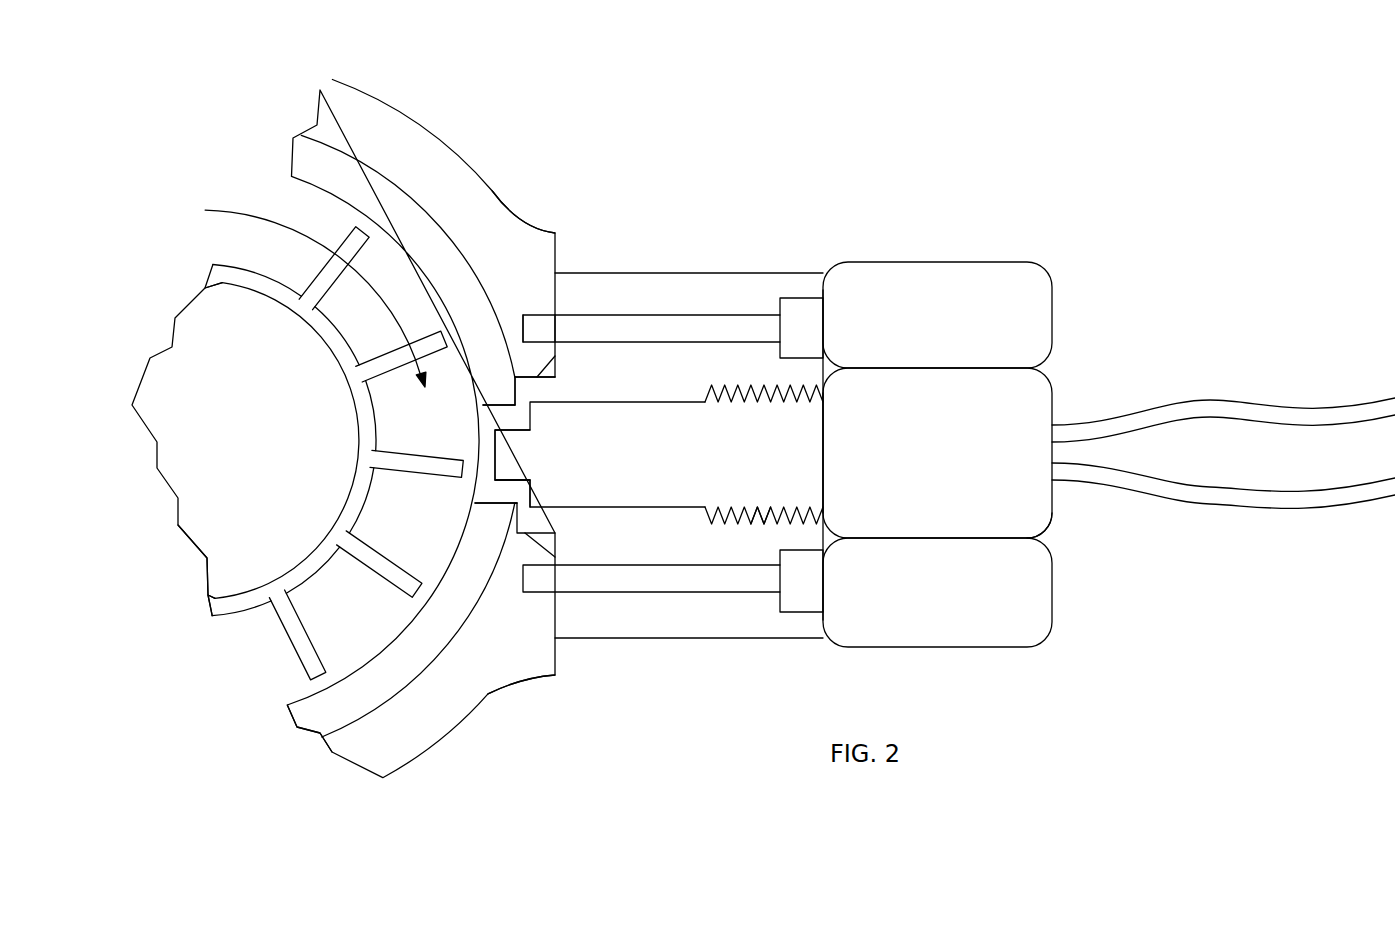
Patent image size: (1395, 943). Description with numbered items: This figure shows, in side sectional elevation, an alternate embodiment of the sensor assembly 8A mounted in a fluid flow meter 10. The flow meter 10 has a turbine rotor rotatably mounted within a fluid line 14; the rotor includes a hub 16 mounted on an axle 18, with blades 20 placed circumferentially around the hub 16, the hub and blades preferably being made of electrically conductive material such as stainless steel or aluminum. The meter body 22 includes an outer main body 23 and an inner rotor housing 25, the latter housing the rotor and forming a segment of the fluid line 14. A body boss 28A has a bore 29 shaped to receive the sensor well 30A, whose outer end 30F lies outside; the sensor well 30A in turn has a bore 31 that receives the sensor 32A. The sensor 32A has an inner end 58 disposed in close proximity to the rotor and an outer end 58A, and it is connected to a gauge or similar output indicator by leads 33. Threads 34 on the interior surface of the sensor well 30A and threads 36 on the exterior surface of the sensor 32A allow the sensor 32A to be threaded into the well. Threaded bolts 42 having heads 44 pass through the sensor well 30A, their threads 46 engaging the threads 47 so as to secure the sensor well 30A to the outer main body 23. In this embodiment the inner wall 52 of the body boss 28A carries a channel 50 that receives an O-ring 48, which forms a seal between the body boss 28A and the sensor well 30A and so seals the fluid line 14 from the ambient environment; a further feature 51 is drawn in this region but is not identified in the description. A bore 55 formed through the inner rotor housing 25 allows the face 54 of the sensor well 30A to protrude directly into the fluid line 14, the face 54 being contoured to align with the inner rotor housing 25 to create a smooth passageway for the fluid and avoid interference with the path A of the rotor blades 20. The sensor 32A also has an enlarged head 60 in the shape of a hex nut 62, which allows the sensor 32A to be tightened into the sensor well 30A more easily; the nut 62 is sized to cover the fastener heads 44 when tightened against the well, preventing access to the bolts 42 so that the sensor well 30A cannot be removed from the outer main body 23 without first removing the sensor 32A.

The fluid flow meter 10 is at (432, 66).
The fluid line 14 is at (262, 649).
The hub 16 is at (207, 568).
The axle 18 is at (205, 438).
The blades 20 is at (305, 612).
The body 22 is at (416, 141).
The outer main body 23 is at (490, 193).
The inner rotor housing 25 is at (300, 718).
The body boss 28A is at (542, 670).
The bore 29 is at (495, 500).
The sensor well 30A is at (668, 623).
The outer end 30F is at (828, 262).
The bore 31 is at (680, 399).
The sensor 32A is at (600, 445).
The leads 33 is at (1268, 403).
The threads 34 is at (752, 520).
The threads 36 is at (758, 522).
The threaded bolts 42 is at (700, 315).
The heads 44 is at (813, 325).
The threads 46 is at (550, 323).
The threads 47 is at (537, 338).
The O-ring 48 is at (557, 367).
The channel 50 is at (513, 373).
The notch wall 51 is at (517, 390).
The inner wall 52 is at (513, 392).
The face 54 is at (477, 488).
The bore 55 is at (498, 407).
The inner end 58 is at (500, 439).
The outer end 58A is at (1057, 530).
The enlarged head 60 is at (823, 403).
The hex nut 62 is at (993, 262).
The sensor assembly 8A is at (954, 383).
The path A is at (220, 208).